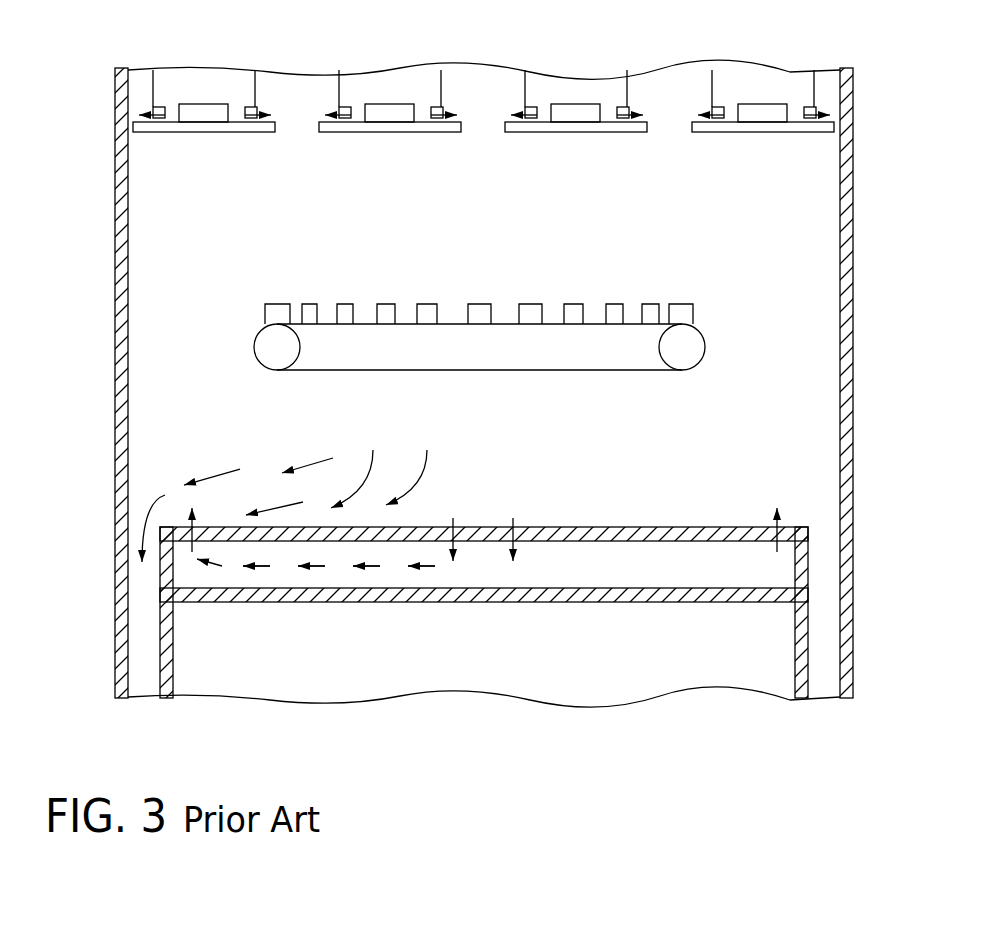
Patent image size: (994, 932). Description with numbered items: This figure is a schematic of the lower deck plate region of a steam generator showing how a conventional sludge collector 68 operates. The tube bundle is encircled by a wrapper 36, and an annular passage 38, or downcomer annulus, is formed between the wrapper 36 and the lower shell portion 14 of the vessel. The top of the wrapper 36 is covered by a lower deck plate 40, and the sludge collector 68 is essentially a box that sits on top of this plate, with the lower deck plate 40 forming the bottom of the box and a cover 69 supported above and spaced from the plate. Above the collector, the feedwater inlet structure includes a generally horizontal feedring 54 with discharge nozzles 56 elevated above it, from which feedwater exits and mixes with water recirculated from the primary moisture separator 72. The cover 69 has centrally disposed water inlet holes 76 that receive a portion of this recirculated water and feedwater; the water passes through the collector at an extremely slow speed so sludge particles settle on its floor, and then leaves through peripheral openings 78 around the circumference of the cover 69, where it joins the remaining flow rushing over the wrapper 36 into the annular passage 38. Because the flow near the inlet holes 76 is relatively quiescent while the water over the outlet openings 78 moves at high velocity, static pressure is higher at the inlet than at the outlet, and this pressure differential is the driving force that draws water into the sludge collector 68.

The lower shell portion 14 is at (115, 387).
The primary moisture separator 72 is at (258, 87).
The feedring 54 is at (262, 360).
The discharge nozzles 56 is at (266, 313).
The sludge collector 68 is at (608, 468).
The water inlet holes 76 is at (456, 518).
The peripheral openings 78 is at (205, 527).
The cover 69 is at (627, 528).
The lower deck plate 40 is at (581, 602).
The wrapper 36 is at (173, 660).
The annular passage 38 is at (140, 678).